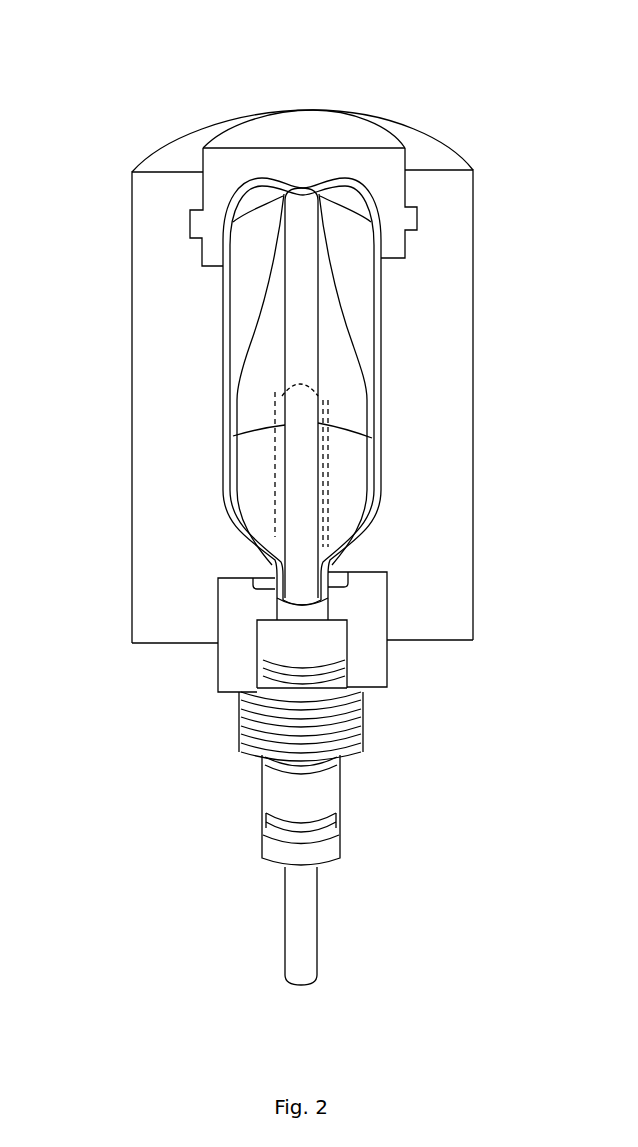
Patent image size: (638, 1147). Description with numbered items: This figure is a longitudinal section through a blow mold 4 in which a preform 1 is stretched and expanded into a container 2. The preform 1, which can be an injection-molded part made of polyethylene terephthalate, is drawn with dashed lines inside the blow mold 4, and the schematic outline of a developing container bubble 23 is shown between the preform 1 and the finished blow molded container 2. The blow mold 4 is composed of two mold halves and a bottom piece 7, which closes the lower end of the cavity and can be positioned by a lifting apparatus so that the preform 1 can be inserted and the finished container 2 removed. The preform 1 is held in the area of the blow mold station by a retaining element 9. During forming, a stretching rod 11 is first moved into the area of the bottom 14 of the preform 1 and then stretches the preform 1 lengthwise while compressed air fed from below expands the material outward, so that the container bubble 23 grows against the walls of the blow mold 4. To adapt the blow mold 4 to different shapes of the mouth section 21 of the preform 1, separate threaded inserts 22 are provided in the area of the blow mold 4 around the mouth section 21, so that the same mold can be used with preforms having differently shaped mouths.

The preform 1 is at (323, 503).
The container 2 is at (222, 387).
The blow mold 4 is at (143, 257).
The bottom piece 7 is at (313, 123).
The retaining element 9 is at (240, 738).
The stretching rod 11 is at (290, 948).
The bottom 14 is at (322, 398).
The mouth section 21 is at (273, 605).
The threaded inserts 22 is at (372, 667).
The container bubble 23 is at (337, 323).